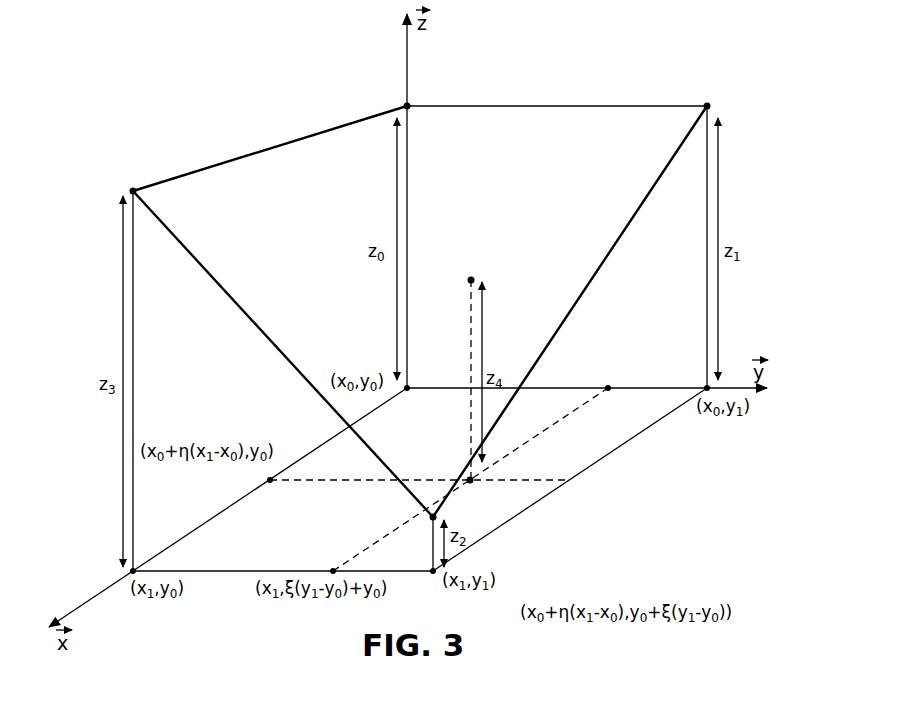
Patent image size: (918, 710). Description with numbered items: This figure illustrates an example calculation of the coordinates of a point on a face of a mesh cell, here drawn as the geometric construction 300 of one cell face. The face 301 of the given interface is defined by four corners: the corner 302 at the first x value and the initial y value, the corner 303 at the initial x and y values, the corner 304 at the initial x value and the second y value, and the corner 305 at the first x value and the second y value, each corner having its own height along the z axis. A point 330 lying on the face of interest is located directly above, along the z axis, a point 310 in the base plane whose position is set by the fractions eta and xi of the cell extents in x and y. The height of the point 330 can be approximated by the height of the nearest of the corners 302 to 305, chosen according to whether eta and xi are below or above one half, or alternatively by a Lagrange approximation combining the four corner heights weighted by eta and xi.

The geometric model / inverted pyramid volume 300 is at (196, 134).
The top edge / upper surface 301 is at (559, 131).
The corner 302 is at (131, 187).
The corner 303 is at (405, 102).
The corner 304 is at (709, 102).
The corner 305 is at (438, 519).
The point 310 is at (473, 481).
The point 330 is at (472, 277).